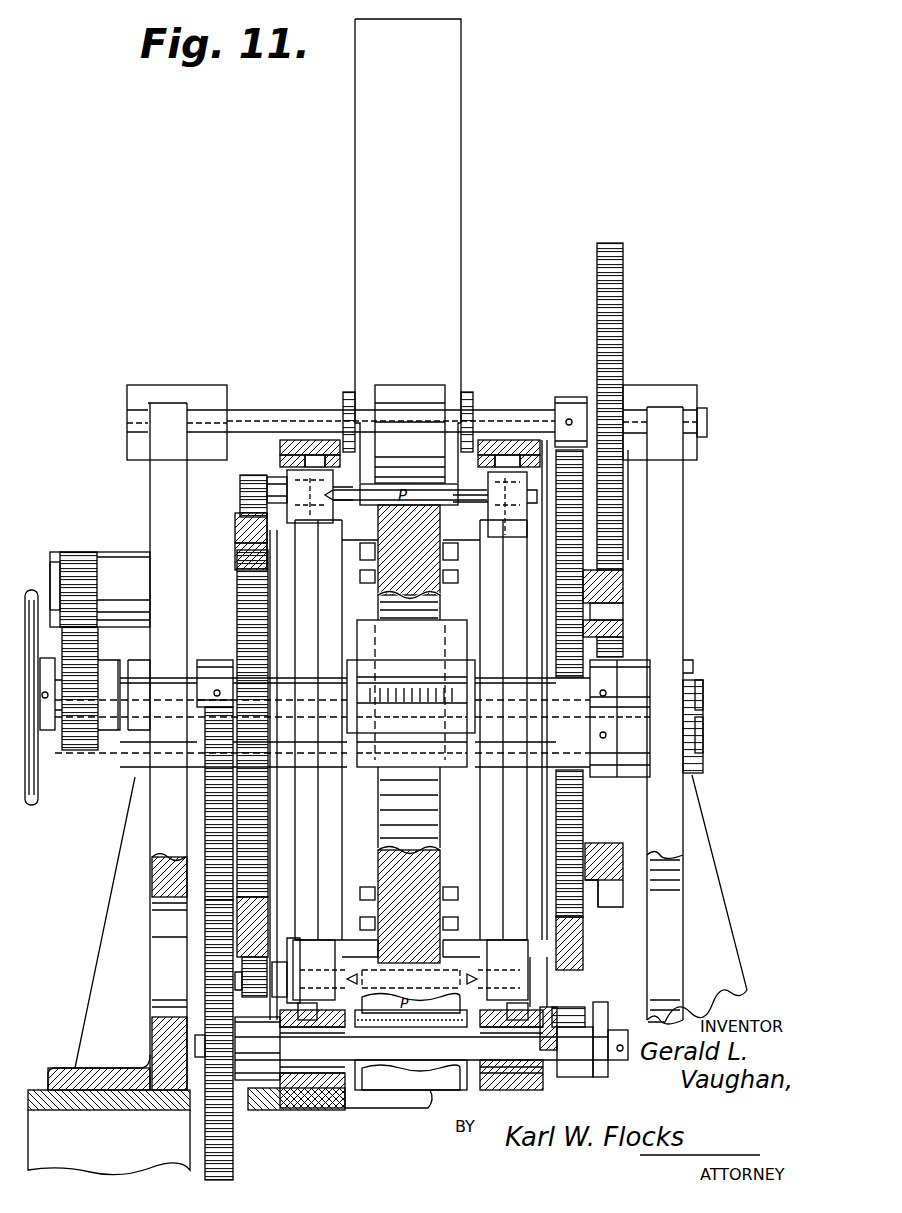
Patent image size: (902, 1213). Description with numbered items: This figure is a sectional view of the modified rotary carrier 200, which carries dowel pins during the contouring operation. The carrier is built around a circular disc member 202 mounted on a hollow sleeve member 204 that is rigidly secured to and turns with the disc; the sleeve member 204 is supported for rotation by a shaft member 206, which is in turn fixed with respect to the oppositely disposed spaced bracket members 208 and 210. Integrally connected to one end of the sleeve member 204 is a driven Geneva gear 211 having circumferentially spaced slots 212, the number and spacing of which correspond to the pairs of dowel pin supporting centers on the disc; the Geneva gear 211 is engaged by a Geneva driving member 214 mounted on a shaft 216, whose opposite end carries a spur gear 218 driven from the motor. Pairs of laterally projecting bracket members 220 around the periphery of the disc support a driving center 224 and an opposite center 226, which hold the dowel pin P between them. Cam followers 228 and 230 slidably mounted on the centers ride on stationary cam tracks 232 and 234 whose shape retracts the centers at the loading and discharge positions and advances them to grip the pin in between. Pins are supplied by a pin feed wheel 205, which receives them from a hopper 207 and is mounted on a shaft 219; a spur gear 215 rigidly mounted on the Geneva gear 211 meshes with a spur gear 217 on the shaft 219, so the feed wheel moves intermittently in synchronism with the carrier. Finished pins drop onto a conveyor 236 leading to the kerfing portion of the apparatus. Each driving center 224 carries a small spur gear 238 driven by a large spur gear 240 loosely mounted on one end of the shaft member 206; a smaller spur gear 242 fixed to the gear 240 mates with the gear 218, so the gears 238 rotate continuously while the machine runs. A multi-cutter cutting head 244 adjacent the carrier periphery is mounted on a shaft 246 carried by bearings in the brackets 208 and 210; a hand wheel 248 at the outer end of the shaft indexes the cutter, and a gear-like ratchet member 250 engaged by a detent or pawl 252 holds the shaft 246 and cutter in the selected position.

The modified rotary carrier 200 is at (305, 376).
The circular disc member 202 is at (422, 836).
The hollow sleeve member 204 is at (472, 775).
The pin feed wheel 205 is at (408, 434).
The shaft member 206 is at (330, 775).
The hopper 207 is at (450, 213).
The bracket member 208 is at (165, 845).
The bracket member 210 is at (670, 615).
The driven Geneva gear 211 is at (575, 927).
The circumferentially spaced slots 212 is at (577, 1000).
The Geneva driving member 214 is at (600, 1010).
The spur gear 215 is at (620, 585).
The shaft 216 is at (525, 1065).
The spur gear 217 is at (612, 313).
The spur gear 218 is at (232, 1130).
The shaft 219 is at (532, 412).
The laterally projecting bracket members 220 is at (293, 532).
The driving center 224 is at (330, 495).
The center 226 is at (518, 500).
The cam follower 228 is at (287, 462).
The cam follower 230 is at (497, 458).
The stationary cam track 232 is at (300, 560).
The stationary cam track 234 is at (513, 555).
The conveyor 236 is at (425, 1070).
The small spur gear 238 is at (248, 490).
The large spur gear 240 is at (247, 592).
The smaller spur gear 242 is at (205, 787).
The multi-cutter cutting head 244 is at (452, 625).
The shaft 246 is at (285, 690).
The hand wheel 248 is at (38, 800).
The gear-like ratchet member 250 is at (82, 740).
The detent or pawl 252 is at (75, 560).